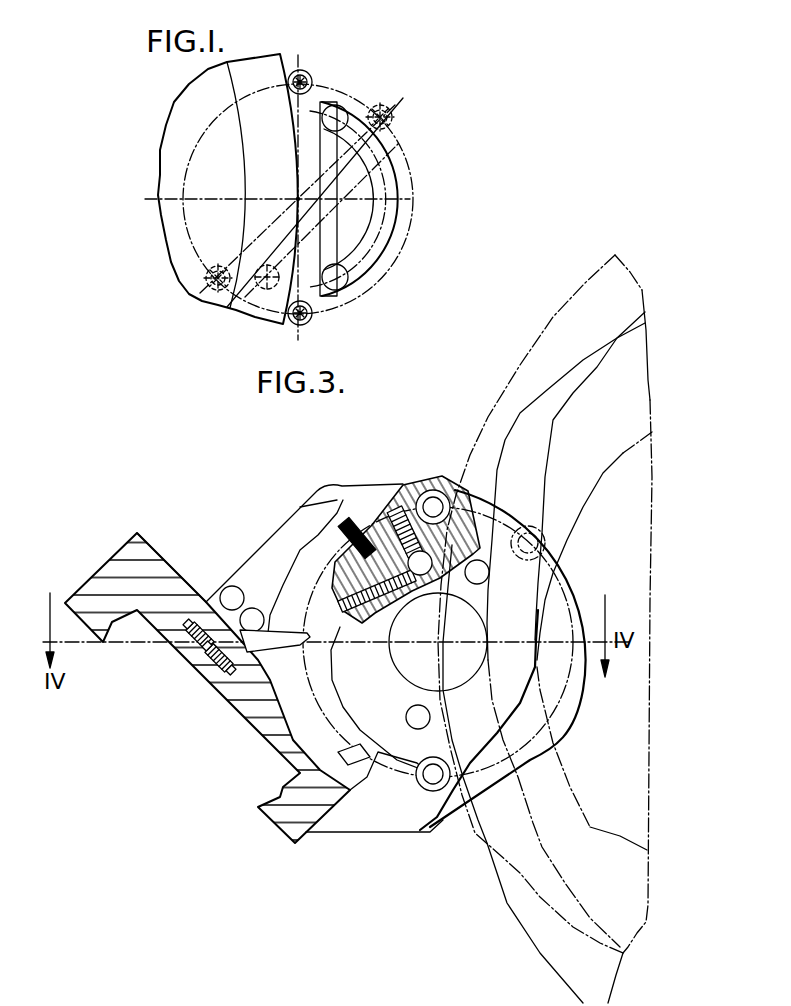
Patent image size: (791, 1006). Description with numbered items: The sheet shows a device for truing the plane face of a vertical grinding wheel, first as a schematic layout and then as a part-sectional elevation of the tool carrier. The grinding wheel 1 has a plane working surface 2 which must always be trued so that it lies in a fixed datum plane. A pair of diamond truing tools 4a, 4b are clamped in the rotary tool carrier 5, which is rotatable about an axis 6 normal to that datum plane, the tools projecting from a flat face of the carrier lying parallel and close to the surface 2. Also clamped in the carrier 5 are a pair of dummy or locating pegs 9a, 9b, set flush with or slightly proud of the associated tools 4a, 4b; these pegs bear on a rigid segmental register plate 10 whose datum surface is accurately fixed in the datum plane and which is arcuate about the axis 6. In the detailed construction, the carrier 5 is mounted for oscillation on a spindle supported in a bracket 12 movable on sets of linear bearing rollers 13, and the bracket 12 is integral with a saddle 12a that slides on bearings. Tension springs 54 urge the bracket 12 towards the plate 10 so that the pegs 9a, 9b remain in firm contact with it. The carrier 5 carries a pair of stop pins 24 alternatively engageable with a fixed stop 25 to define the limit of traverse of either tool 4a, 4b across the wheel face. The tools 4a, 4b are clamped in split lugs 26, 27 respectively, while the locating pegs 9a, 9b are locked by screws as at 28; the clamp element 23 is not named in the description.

In FIG. 1, the grinding wheel 1 is at (182, 108).
In FIG. 3, the grinding wheel 1 is at (527, 403).
In FIG. 1, the plane working surface 2 is at (246, 72).
In FIG. 1, the diamond truing tool 4a is at (377, 105).
In FIG. 3, the diamond truing tool 4a is at (434, 490).
In FIG. 1, the diamond truing tool 4b is at (224, 288).
In FIG. 3, the diamond truing tool 4b is at (437, 784).
In FIG. 3, the rotary tool carrier 5 is at (537, 667).
In FIG. 1, the axis 6 is at (298, 199).
In FIG. 3, the axis 6 is at (438, 643).
In FIG. 1, the locating peg 9a is at (348, 283).
In FIG. 3, the locating peg 9a is at (408, 714).
In FIG. 1, the locating peg 9b is at (346, 126).
In FIG. 3, the locating peg 9b is at (472, 581).
In FIG. 1, the register plate 10 is at (393, 218).
In FIG. 3, the bracket 12 is at (278, 532).
In FIG. 3, the saddle 12a is at (162, 568).
In FIG. 3, the linear bearing rollers 13 is at (112, 628).
In FIG. 3, the clamp screw 23 is at (345, 520).
In FIG. 3, the stop pins 24 is at (343, 746).
In FIG. 3, the fixed stop 25 is at (307, 643).
In FIG. 3, the split lug 26 is at (368, 505).
In FIG. 3, the split lug 27 is at (382, 771).
In FIG. 3, the screw 28 is at (337, 597).
In FIG. 3, the tension springs 54 is at (241, 592).